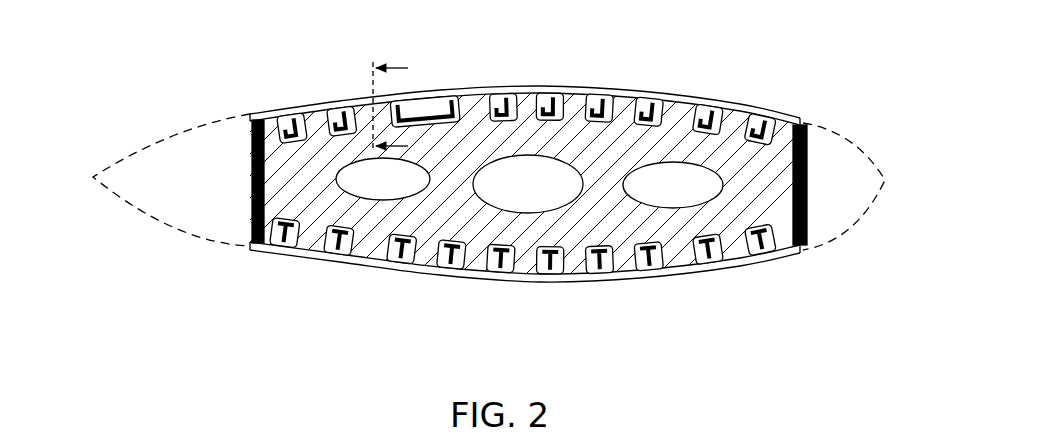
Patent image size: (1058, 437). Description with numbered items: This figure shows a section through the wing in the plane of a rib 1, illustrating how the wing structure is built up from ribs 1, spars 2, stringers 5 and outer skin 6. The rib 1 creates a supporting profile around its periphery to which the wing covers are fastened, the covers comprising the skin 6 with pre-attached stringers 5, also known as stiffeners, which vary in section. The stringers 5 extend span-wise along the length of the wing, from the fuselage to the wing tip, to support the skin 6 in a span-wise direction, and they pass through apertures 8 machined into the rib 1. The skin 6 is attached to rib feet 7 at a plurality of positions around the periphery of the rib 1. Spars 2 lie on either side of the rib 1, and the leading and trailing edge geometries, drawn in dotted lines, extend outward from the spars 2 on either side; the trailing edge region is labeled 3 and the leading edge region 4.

The rib 1 is at (488, 181).
The spars 2 is at (246, 167).
The trailing edge 3 is at (884, 180).
The leading edge 4 is at (93, 177).
The stringers 5 is at (766, 262).
The outer skin 6 is at (525, 178).
The rib feet 7 is at (688, 96).
The apertures 8 is at (644, 104).